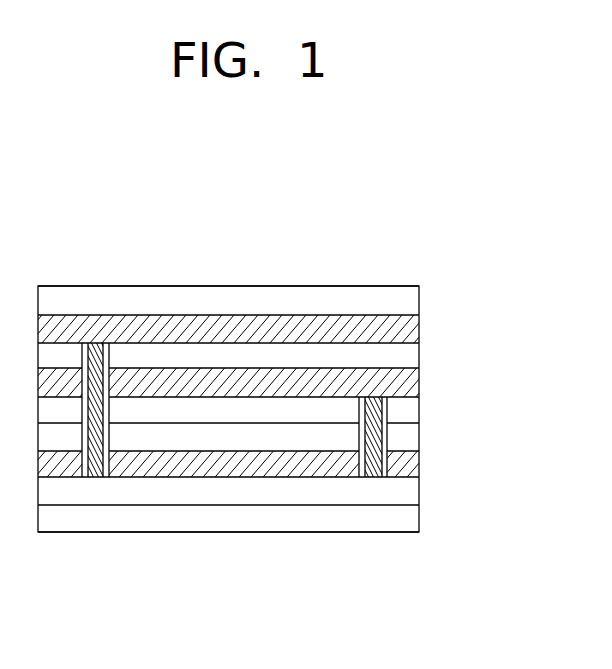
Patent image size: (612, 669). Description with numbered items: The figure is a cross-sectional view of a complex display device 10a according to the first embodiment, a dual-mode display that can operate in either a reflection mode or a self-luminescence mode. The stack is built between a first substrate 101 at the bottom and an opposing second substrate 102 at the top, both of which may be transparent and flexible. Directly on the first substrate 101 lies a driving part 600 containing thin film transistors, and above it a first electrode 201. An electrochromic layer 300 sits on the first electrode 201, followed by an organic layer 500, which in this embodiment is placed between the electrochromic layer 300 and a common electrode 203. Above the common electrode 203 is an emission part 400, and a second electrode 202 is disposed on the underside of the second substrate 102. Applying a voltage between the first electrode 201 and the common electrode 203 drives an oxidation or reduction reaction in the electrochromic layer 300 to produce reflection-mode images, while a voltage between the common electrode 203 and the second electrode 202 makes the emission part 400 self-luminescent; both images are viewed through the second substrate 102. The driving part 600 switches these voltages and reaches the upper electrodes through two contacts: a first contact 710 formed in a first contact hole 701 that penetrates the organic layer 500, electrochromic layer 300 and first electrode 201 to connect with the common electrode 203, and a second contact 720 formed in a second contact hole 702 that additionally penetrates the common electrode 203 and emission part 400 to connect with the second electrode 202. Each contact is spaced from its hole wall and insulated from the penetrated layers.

The complex display device 10a is at (400, 227).
The first substrate 101 is at (408, 517).
The second substrate 102 is at (408, 302).
The first electrode 201 is at (408, 464).
The second electrode 202 is at (408, 329).
The common electrode 203 is at (408, 384).
The electrochromic layer 300 is at (408, 438).
The emission part 400 is at (408, 357).
The organic layer 500 is at (408, 409).
The driving part 600 is at (408, 492).
The first contact hole 701 is at (383, 477).
The second contact hole 702 is at (107, 477).
The first contact 710 is at (366, 477).
The second contact 720 is at (90, 477).